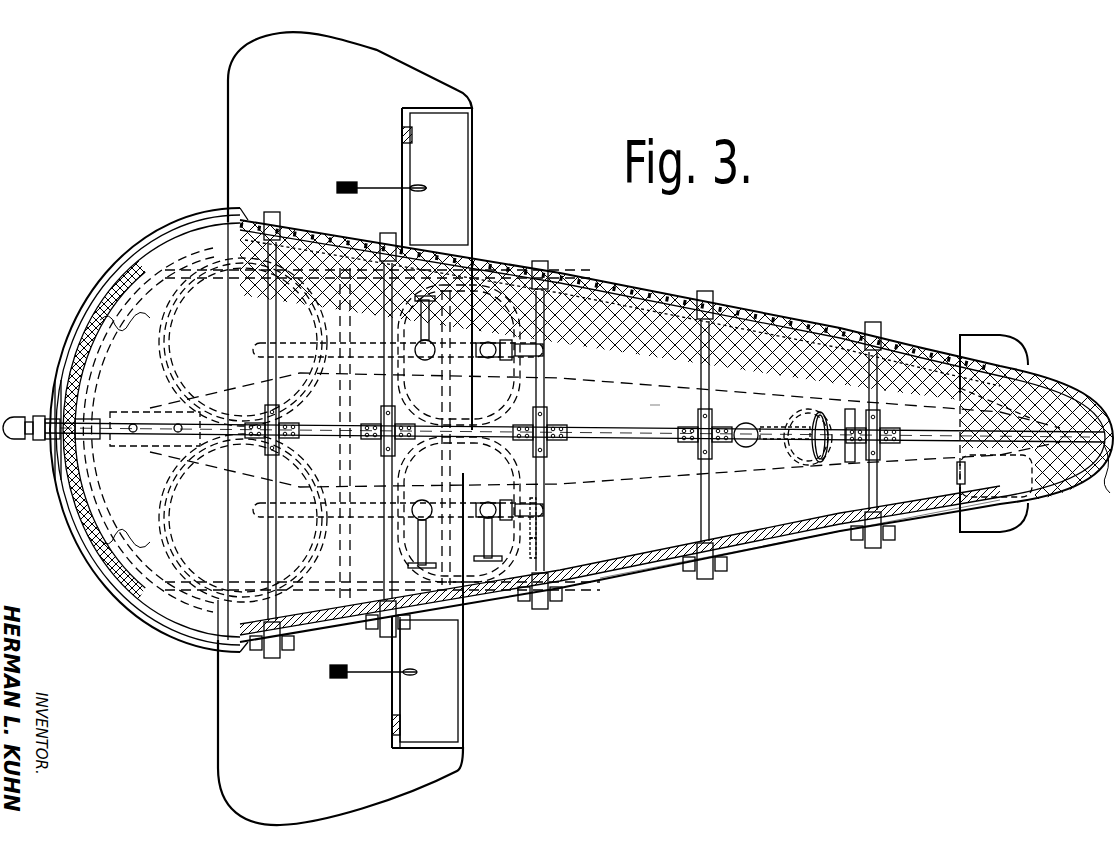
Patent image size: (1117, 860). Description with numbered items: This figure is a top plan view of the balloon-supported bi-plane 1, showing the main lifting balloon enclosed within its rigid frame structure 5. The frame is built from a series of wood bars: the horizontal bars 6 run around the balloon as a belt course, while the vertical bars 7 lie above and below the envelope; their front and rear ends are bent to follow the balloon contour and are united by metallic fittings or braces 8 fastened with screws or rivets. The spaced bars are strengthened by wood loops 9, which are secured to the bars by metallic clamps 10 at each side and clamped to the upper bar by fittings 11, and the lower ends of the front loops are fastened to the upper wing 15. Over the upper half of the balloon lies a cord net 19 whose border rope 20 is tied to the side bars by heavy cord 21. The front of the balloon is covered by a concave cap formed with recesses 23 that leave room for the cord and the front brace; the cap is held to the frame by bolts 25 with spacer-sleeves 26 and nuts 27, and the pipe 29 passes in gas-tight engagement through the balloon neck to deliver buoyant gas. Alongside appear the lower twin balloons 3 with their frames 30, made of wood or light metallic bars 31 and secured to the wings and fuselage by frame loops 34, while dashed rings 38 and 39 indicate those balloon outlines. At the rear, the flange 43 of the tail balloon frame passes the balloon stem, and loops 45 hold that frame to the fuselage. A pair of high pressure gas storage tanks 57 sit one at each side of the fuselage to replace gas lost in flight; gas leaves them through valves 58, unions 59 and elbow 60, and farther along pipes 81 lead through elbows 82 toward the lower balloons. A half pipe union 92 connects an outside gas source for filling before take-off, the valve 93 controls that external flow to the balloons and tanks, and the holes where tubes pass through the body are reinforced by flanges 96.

The bi-plane 1 is at (620, 478).
The lower twin balloons 3 is at (650, 578).
The rigid frame structure 5 is at (648, 425).
The horizontal wood bars 6 is at (520, 425).
The vertical wood bars 7 is at (622, 440).
The metallic fittings or braces 8 is at (53, 470).
The wood loops 9 is at (268, 545).
The metallic fittings or clamps 10 is at (380, 625).
The fittings 11 is at (280, 448).
The upper wing 15 is at (345, 428).
The cord net 19 is at (608, 350).
The border rope 20 is at (765, 562).
The heavy cord 21 is at (655, 298).
The recesses 23 is at (88, 320).
The bolts 25 is at (200, 218).
The spacer-sleeves 26 is at (122, 268).
The nuts 27 is at (150, 305).
The pipe 29 is at (52, 445).
The frames of the lower twin balloons 30 is at (382, 441).
The wood or light metallic bars 31 is at (358, 434).
The frame loops 34 is at (485, 608).
The outer dashed ring 38 is at (168, 352).
The inner dashed rings 39 is at (172, 380).
The flange 43 is at (795, 414).
The loops 45 is at (818, 472).
The high pressure gas storage tanks 57 is at (335, 365).
The valves 58 is at (410, 340).
The unions 59 is at (486, 443).
The elbow 60 is at (491, 442).
The pipes or tubes 81 is at (602, 382).
The elbows 82 is at (548, 355).
The half pipe union 92 is at (548, 509).
The valve 93 is at (548, 542).
The flanges 96 is at (742, 445).